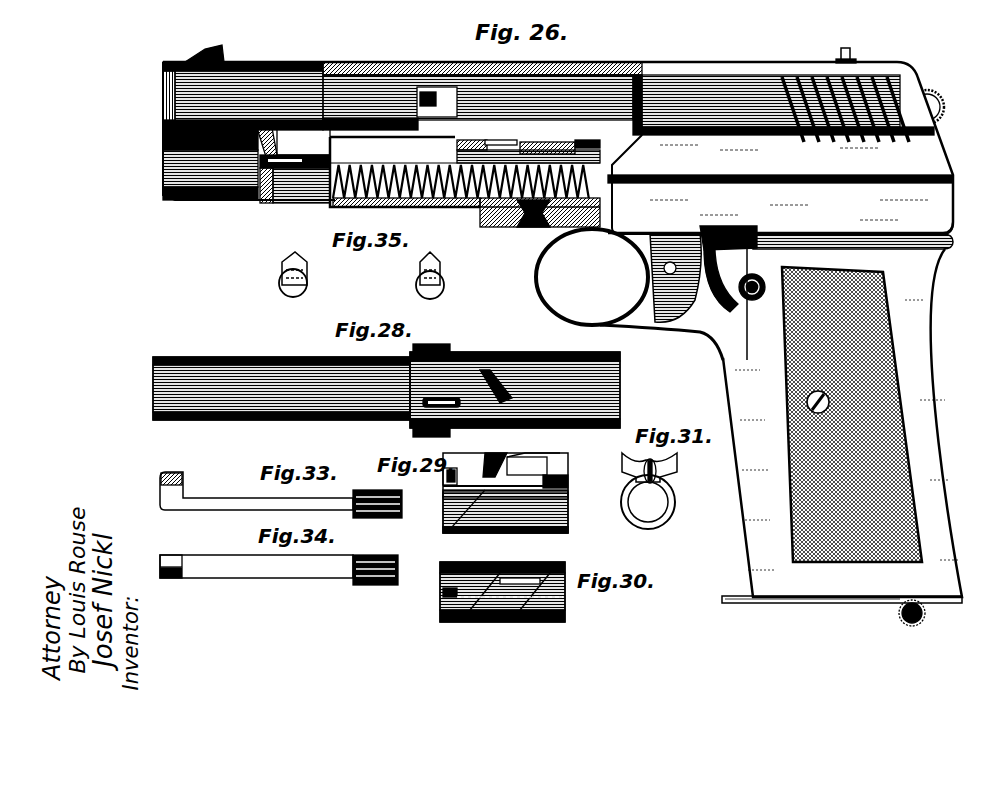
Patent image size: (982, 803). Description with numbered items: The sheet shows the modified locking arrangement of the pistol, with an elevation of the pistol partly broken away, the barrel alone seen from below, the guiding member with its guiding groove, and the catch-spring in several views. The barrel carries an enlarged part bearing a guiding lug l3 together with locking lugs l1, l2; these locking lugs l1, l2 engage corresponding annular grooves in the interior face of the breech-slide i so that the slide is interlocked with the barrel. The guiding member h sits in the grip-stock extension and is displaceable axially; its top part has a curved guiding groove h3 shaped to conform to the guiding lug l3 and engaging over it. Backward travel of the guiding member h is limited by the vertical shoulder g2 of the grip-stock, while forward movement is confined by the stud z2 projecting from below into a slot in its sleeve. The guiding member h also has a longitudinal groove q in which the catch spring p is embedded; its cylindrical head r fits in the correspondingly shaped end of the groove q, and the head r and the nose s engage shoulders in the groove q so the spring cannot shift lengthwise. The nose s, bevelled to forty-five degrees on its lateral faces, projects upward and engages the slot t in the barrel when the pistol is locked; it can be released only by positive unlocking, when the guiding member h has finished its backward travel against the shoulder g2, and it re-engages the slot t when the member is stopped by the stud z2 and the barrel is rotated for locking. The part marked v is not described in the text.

In FIG. 26, the breech-slide i is at (707, 92).
In FIG. 26, the barrel v is at (513, 100).
In FIG. 26, the cylindrical head r is at (637, 76).
In FIG. 35, the cylindrical head r is at (307, 286).
In FIG. 29, the cylindrical head r is at (569, 480).
In FIG. 30, the cylindrical head r is at (565, 600).
In FIG. 26, the catch spring p is at (472, 162).
In FIG. 29, the catch spring p is at (443, 497).
In FIG. 31, the catch spring p is at (668, 480).
In FIG. 33, the catch spring p is at (273, 506).
In FIG. 34, the catch spring p is at (293, 563).
In FIG. 26, the guiding lug l3 is at (500, 142).
In FIG. 28, the guiding lug l3 is at (512, 362).
In FIG. 26, the guiding member h is at (530, 165).
In FIG. 29, the guiding member h is at (568, 512).
In FIG. 30, the guiding member h is at (565, 570).
In FIG. 31, the guiding member h is at (640, 503).
In FIG. 26, the stud z2 is at (528, 228).
In FIG. 26, the shoulder of the grip-stock g2 is at (593, 200).
In FIG. 35, the nose s is at (349, 263).
In FIG. 29, the nose s is at (443, 478).
In FIG. 30, the nose s is at (443, 592).
In FIG. 33, the nose s is at (184, 484).
In FIG. 34, the nose s is at (172, 578).
In FIG. 28, the slot in the barrel t is at (398, 421).
In FIG. 28, the locking lug l2 is at (433, 352).
In FIG. 28, the locking lug l1 is at (450, 432).
In FIG. 29, the guiding groove h3 is at (513, 466).
In FIG. 30, the guiding groove h3 is at (537, 564).
In FIG. 29, the longitudinal groove q is at (447, 528).